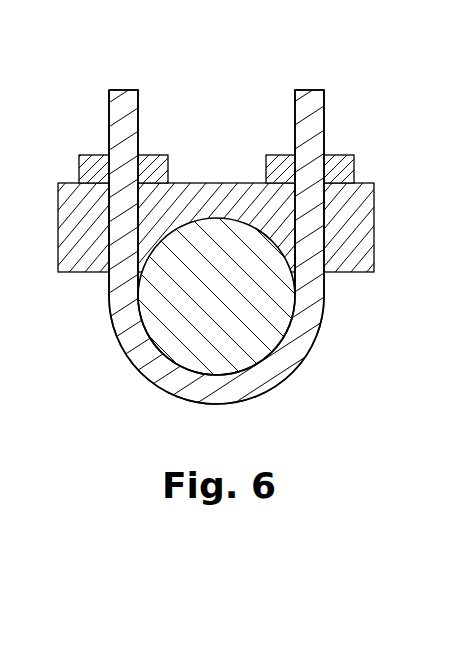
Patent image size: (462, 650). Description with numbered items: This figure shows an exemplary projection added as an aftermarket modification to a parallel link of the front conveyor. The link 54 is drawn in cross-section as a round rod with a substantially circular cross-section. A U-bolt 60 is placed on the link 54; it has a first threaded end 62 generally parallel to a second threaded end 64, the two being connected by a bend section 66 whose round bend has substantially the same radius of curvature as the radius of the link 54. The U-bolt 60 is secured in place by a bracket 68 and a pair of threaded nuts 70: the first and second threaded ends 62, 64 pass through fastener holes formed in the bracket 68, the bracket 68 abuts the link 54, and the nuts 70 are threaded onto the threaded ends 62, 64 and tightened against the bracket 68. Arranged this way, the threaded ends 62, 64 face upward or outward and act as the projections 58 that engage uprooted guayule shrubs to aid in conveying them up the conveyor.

The link 54 is at (285, 323).
The projections 58 is at (231, 320).
The U-bolt 60 is at (312, 247).
The first threaded end 62 is at (317, 108).
The second threaded end 64 is at (125, 108).
The bend section 66 is at (237, 387).
The bracket 68 is at (355, 202).
The threaded nuts 70 is at (88, 167).